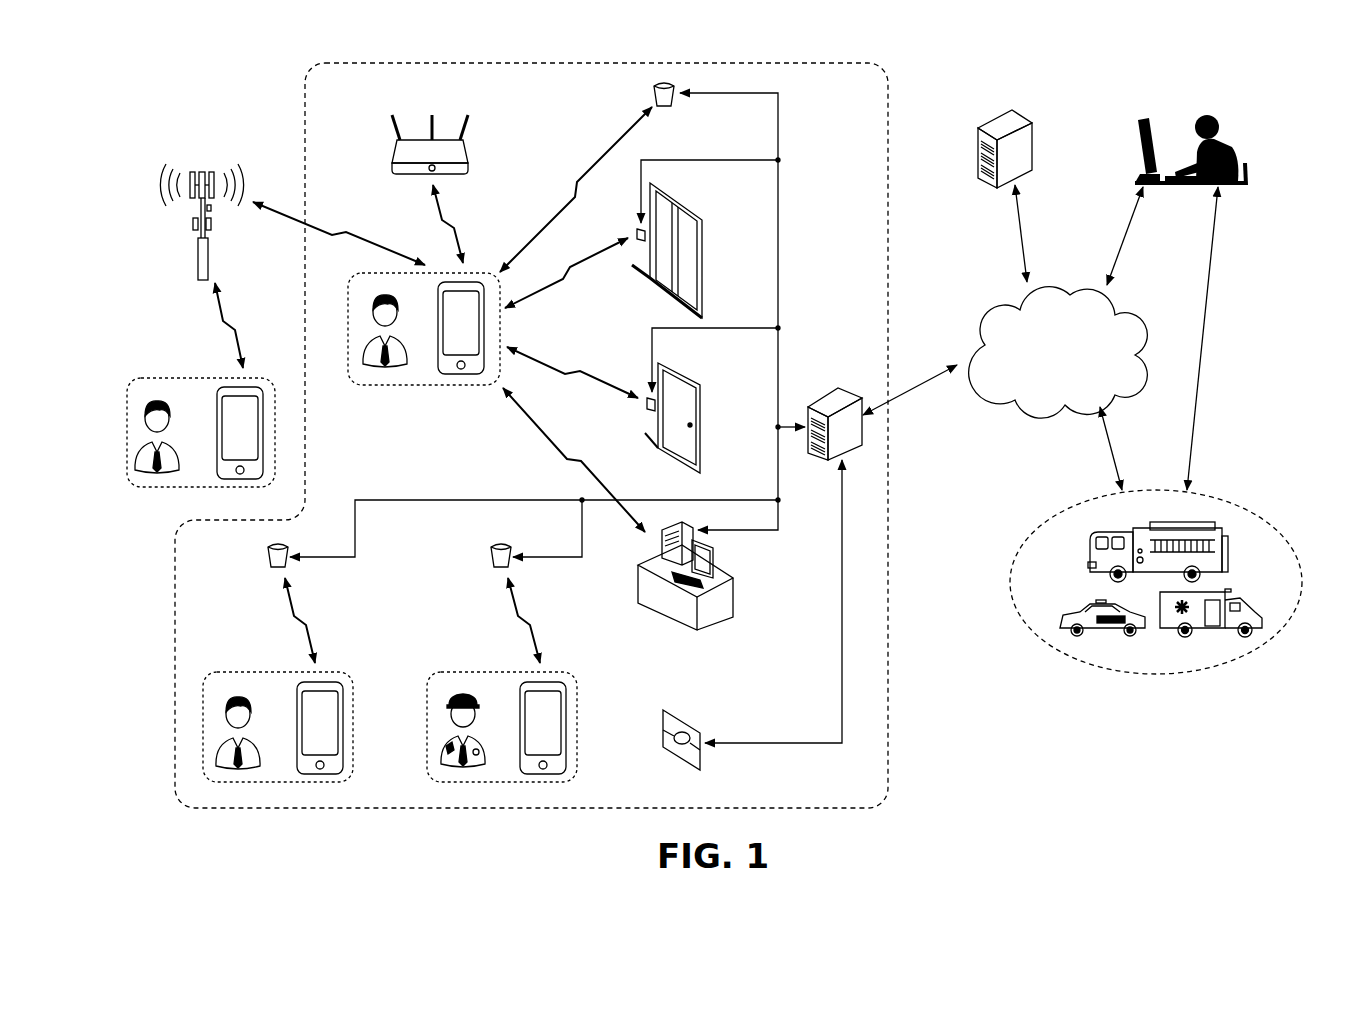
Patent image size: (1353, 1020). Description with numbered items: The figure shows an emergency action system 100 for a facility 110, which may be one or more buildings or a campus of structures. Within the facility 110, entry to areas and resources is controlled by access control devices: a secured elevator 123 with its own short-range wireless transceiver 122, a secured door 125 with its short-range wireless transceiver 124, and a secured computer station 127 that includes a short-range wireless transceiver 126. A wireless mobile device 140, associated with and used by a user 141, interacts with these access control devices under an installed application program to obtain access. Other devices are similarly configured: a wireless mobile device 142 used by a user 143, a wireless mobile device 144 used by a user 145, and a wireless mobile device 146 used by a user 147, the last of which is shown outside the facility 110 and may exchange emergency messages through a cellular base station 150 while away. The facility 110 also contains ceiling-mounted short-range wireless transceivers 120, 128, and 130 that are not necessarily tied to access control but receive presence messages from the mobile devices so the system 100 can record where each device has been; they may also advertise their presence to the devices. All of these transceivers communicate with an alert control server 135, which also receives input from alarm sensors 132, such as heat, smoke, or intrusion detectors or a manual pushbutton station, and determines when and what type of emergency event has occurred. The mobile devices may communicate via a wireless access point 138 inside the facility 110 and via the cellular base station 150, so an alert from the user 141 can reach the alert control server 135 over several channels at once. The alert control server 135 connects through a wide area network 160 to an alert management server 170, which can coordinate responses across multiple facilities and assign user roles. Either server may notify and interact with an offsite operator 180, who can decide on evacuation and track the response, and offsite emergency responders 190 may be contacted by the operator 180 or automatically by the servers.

The emergency action system 100 is at (171, 80).
The facility 110 is at (555, 435).
The short-range wireless transceiver 120 is at (616, 98).
The short-range wireless transceiver 122 is at (617, 271).
The secured elevator 123 is at (690, 249).
The short-range wireless transceiver 124 is at (630, 435).
The secured door 125 is at (694, 408).
The short-range wireless transceiver 126 is at (665, 580).
The secured computer station 127 is at (723, 586).
The short-range wireless transceiver 128 is at (479, 590).
The short-range wireless transceiver 130 is at (255, 590).
The alarm sensor 132 is at (708, 708).
The alert control server 135 is at (843, 391).
The wireless access point 138 is at (439, 121).
The wireless mobile device 140 is at (442, 361).
The user 141 is at (372, 367).
The wireless mobile device 142 is at (564, 710).
The user 143 is at (449, 765).
The wireless mobile device 144 is at (340, 710).
The user 145 is at (224, 766).
The wireless mobile device 146 is at (258, 404).
The user 147 is at (169, 401).
The cellular base station 150 is at (207, 194).
The wide area network 160 is at (1058, 324).
The alert management server 170 is at (1022, 121).
The offsite operator 180 is at (1204, 119).
The offsite emergency responders 190 is at (1156, 618).